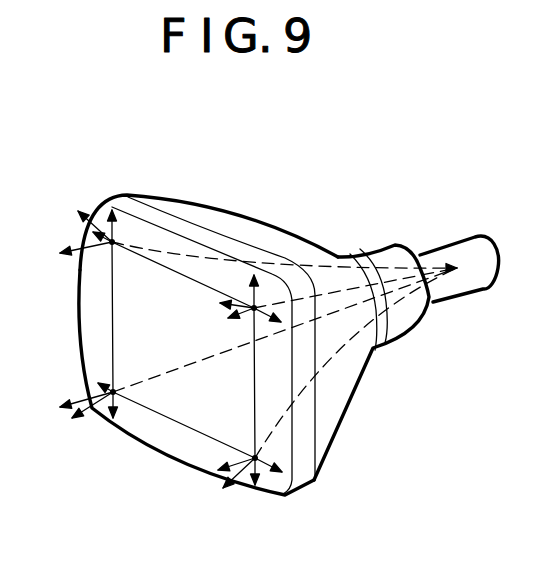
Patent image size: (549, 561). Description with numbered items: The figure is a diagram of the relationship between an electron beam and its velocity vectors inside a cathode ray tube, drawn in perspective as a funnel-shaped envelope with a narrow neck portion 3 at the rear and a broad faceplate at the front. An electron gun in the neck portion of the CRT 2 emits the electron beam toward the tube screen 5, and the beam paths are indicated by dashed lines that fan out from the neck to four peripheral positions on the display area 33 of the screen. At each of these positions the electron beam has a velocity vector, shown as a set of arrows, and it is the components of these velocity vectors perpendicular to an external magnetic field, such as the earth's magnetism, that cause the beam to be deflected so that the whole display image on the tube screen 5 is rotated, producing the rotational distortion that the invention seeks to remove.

The CRT 2 is at (365, 244).
The neck 3 is at (460, 250).
The tube screen 5 is at (283, 368).
The display area 33 is at (173, 403).